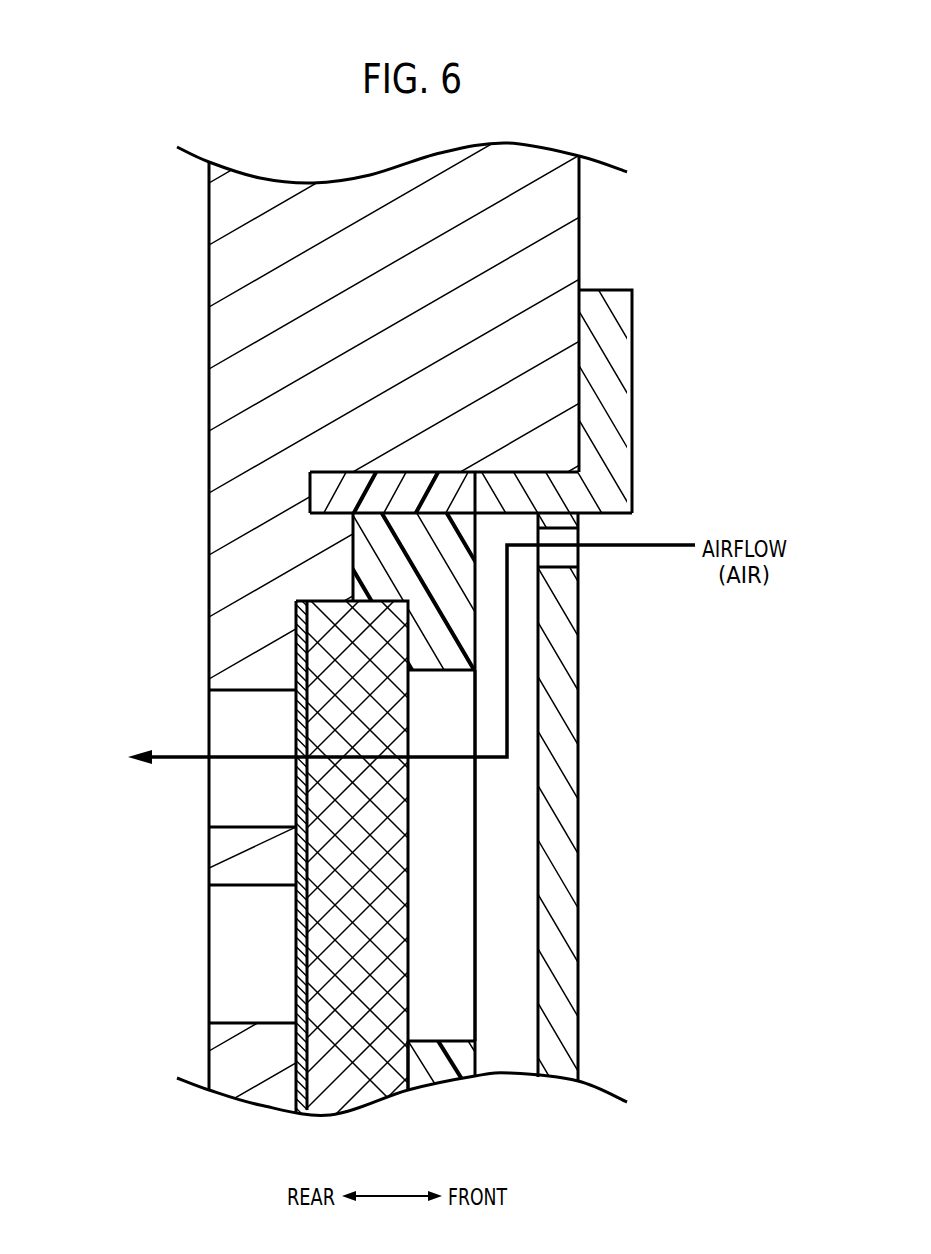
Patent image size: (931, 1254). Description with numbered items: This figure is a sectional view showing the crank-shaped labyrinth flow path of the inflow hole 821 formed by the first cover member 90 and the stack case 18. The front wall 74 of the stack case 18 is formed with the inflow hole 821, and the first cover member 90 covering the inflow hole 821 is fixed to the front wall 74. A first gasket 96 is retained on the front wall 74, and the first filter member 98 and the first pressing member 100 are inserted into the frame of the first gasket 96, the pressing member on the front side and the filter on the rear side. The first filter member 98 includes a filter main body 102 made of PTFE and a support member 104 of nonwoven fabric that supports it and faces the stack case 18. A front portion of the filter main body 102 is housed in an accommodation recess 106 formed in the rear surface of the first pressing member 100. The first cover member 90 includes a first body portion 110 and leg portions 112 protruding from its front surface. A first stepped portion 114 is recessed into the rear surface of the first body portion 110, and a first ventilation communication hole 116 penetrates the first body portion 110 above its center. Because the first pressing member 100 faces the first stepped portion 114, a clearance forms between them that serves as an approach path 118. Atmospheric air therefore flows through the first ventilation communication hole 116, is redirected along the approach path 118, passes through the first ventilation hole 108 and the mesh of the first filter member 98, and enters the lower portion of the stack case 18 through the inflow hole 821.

The stack case 18 is at (222, 277).
The front wall 74 is at (333, 557).
The inflow hole 821 is at (235, 692).
The first cover member 90 is at (490, 690).
The first gasket 96 is at (425, 486).
The first filter member 98 is at (256, 870).
The first pressing member 100 is at (447, 650).
The filter main body 102 is at (320, 917).
The support member 104 is at (300, 963).
The accommodation recess 106 is at (400, 630).
The first ventilation hole 108 is at (450, 1040).
The first body portion 110 is at (585, 797).
The leg portion 112 is at (617, 397).
The first stepped portion 114 is at (540, 785).
The first ventilation communication hole 116 is at (566, 563).
The approach path 118 is at (517, 617).